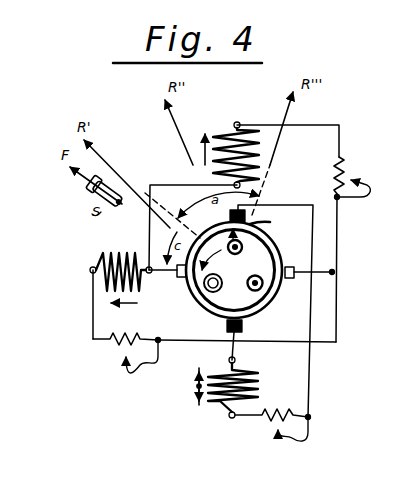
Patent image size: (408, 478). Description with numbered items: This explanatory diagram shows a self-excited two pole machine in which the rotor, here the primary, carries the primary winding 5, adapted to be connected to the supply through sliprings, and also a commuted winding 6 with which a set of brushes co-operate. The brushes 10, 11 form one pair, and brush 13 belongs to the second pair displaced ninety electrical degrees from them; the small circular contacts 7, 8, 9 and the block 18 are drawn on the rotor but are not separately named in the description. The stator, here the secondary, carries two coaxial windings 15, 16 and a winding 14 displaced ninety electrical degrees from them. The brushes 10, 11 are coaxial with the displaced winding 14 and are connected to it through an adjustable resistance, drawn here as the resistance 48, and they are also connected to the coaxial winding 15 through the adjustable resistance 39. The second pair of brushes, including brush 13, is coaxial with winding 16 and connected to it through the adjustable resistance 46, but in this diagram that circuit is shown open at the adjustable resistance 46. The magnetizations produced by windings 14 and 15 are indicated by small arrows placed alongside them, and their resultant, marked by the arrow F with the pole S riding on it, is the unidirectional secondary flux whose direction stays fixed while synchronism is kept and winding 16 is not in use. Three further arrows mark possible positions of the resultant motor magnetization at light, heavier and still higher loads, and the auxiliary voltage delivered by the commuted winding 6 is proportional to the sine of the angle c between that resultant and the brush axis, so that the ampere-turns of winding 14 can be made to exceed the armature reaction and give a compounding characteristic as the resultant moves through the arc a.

The primary winding 5 is at (260, 228).
The commuted winding 6 is at (195, 305).
The contact terminal 7 is at (242, 250).
The contact terminal 8 is at (249, 290).
The contact terminal 9 is at (213, 275).
The brush 10 is at (292, 266).
The brush 11 is at (167, 280).
The brush 13 is at (242, 327).
The displaced winding 14 is at (112, 275).
The coaxial winding 15 is at (272, 141).
The coaxial winding 16 is at (257, 375).
The upper stop block 18 is at (224, 218).
The adjustable resistance 39 is at (354, 174).
The adjustable resistance 46 is at (270, 428).
The resistor 48 is at (121, 354).